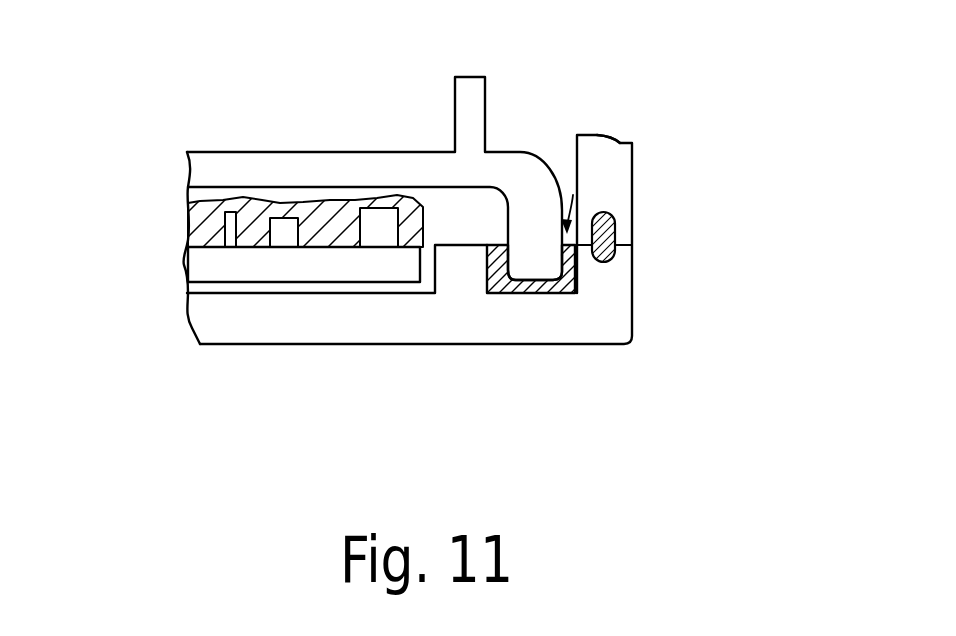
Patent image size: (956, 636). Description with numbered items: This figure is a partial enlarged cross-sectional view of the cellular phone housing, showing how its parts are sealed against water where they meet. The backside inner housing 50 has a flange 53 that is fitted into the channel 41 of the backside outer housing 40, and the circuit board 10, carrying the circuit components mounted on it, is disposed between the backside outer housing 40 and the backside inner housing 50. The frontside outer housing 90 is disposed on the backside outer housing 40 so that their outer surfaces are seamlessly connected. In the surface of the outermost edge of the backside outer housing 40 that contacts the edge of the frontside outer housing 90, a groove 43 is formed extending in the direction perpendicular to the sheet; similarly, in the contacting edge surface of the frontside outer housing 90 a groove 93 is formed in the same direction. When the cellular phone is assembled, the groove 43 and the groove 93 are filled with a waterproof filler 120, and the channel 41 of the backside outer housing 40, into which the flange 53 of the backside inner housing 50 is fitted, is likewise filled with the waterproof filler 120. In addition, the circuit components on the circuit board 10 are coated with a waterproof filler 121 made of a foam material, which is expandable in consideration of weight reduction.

The circuit board 10 is at (200, 265).
The backside outer housing 40 is at (619, 306).
The channel 41 is at (573, 195).
The groove 43 is at (604, 240).
The backside inner housing 50 is at (505, 167).
The flange 53 is at (537, 262).
The frontside outer housing 90 is at (623, 170).
The groove 93 is at (608, 232).
The waterproof filler 120 is at (502, 282).
The waterproof filler 121 is at (327, 223).